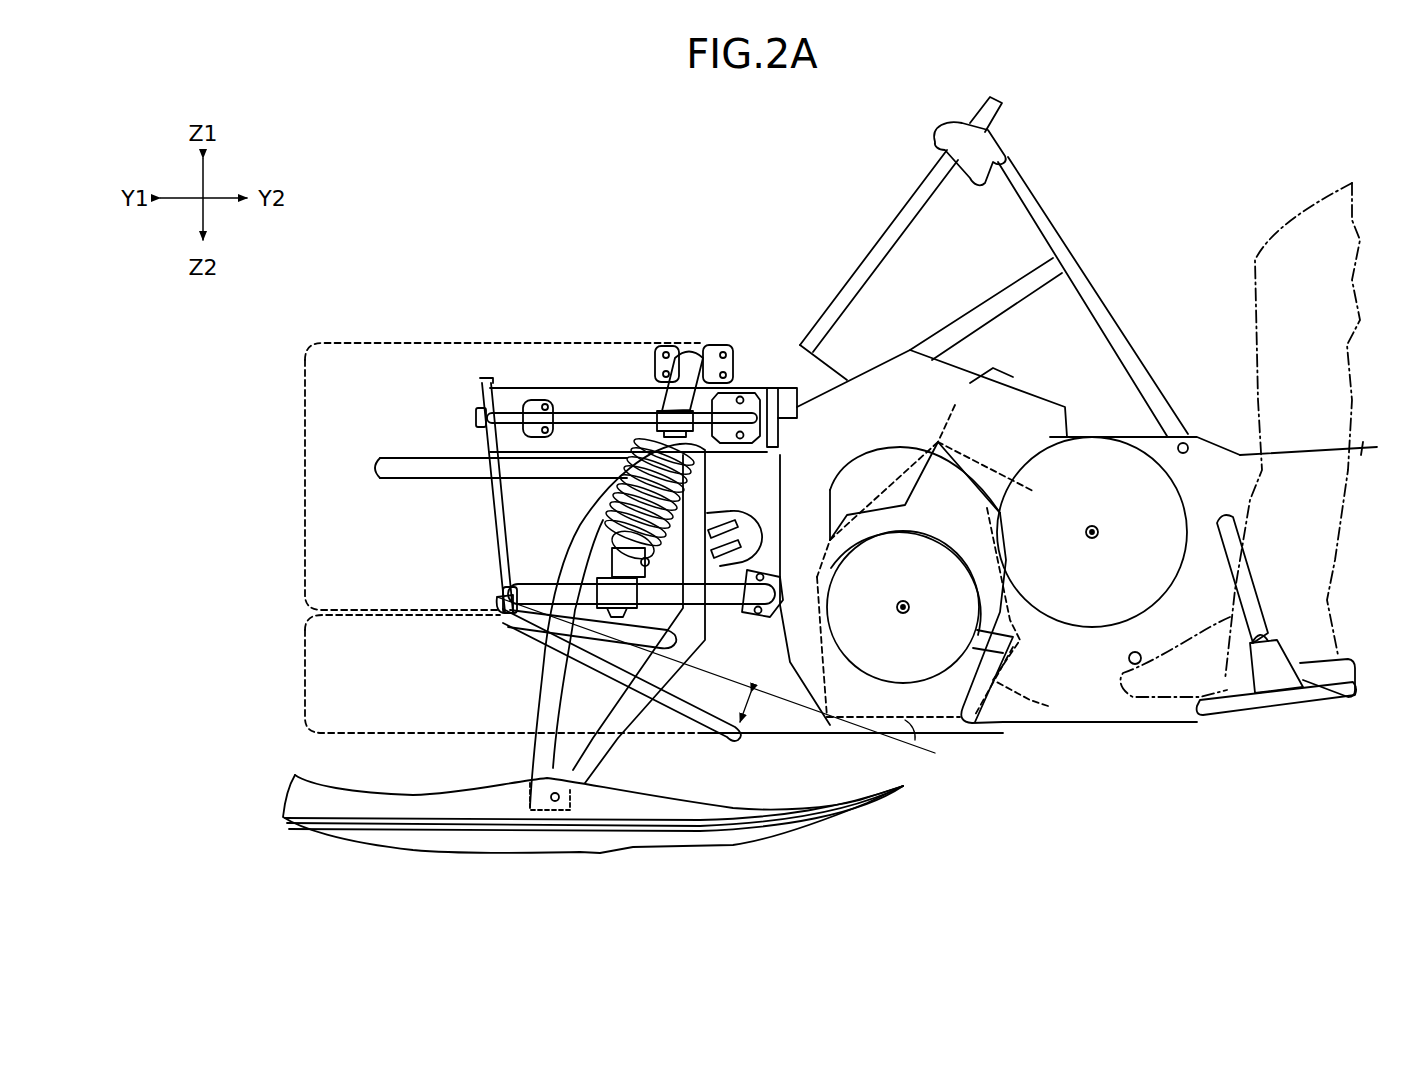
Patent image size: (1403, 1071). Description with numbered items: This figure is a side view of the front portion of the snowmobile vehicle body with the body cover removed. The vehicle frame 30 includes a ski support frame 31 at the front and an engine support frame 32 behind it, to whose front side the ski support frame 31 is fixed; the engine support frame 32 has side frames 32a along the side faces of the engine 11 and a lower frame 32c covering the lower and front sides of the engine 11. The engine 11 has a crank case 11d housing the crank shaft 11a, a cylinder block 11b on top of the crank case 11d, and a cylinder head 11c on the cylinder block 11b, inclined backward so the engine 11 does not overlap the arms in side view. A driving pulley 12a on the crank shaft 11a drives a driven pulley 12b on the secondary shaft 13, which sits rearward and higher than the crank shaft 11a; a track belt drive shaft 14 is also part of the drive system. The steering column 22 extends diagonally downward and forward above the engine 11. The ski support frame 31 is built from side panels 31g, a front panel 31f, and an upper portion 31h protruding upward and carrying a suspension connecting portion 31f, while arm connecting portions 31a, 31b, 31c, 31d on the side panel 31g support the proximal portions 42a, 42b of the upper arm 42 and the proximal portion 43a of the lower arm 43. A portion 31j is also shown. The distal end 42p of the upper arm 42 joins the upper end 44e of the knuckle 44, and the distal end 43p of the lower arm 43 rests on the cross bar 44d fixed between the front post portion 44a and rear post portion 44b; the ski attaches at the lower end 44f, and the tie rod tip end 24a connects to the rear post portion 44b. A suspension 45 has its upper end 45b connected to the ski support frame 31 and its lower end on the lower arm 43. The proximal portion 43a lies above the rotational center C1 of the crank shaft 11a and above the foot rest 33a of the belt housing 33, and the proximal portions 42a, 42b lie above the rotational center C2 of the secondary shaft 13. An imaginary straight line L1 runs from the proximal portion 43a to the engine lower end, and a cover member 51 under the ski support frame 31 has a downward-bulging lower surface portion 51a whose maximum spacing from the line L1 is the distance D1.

The engine 11 is at (1077, 406).
The crank shaft 11a is at (906, 603).
The cylinder block 11b is at (1015, 520).
The cylinder head 11c is at (955, 405).
The crank case 11d is at (990, 705).
The driving pulley 12a is at (990, 640).
The driven pulley 12b is at (1110, 437).
The secondary shaft 13 is at (1096, 527).
The track belt drive shaft 14 is at (1140, 654).
The steering column 22 is at (890, 243).
The tip end of tie rod 24a is at (748, 550).
The vehicle frame 30 is at (1290, 448).
The ski support frame 31 is at (300, 343).
The arm connecting portion 31a is at (545, 400).
The arm connecting portion 31b is at (773, 392).
The arm connecting portion 31c is at (500, 607).
The arm connecting portion 31d is at (767, 622).
The suspension connecting portion 31f is at (718, 345).
The side panel 31g is at (517, 527).
The upper portion of ski support frame 31h is at (665, 346).
The bracket post 31j is at (487, 510).
The engine support frame 32 is at (1040, 398).
The side frame 32a is at (1000, 397).
The lower frame 32c is at (893, 740).
The belt housing 33 is at (1362, 450).
The foot rest 33a is at (1265, 700).
The upper arm 42 is at (598, 398).
The proximal portion of upper arm 42a is at (487, 413).
The proximal portion of upper arm 42b is at (740, 405).
The distal end of upper arm 42p is at (662, 410).
The lower arm 43 is at (709, 610).
The proximal portion of lower arm 43a is at (512, 587).
The distal end of lower arm 43p is at (625, 600).
The knuckle 44 is at (600, 655).
The front post portion 44a is at (585, 512).
The rear post portion 44b is at (700, 492).
The cross bar 44d is at (628, 634).
The upper end of knuckle 44e is at (657, 420).
The lower end of knuckle 44f is at (553, 810).
The suspension 45 is at (628, 495).
The upper end of suspension 45b is at (685, 348).
The cover member 51 is at (300, 616).
The lower surface portion 51a is at (775, 736).
The rotational center of crank shaft C1 is at (903, 613).
The rotational center of secondary shaft C2 is at (1092, 540).
The imaginary straight line L1 is at (730, 681).
The distance D1 is at (763, 710).